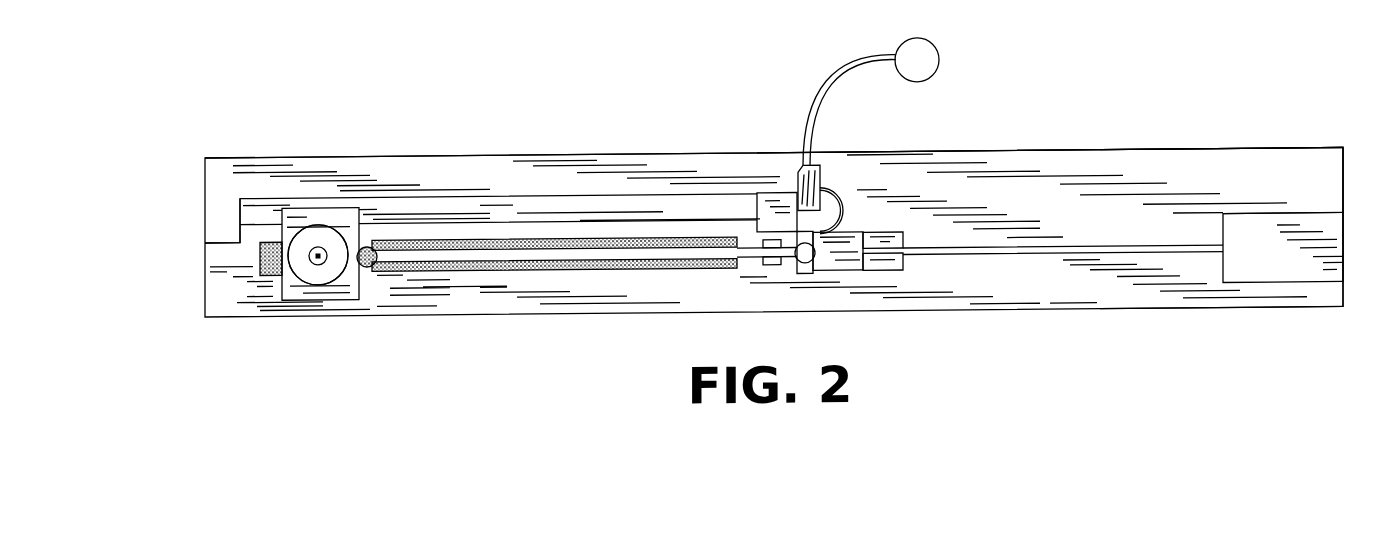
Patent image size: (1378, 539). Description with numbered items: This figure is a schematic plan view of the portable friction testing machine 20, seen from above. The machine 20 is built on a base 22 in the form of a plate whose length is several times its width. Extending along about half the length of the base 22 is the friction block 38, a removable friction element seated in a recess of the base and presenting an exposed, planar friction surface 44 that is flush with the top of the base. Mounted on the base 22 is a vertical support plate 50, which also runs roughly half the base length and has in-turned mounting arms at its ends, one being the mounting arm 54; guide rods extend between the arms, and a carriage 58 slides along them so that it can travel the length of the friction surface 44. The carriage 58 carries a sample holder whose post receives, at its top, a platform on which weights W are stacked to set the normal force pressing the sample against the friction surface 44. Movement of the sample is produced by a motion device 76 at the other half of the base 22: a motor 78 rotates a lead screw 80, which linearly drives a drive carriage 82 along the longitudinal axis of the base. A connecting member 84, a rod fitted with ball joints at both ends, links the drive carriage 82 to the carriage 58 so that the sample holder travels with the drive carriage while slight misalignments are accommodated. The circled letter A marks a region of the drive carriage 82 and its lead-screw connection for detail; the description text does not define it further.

The portable friction testing machine 20 is at (1176, 114).
The base 22 is at (1112, 317).
The friction block 38 is at (464, 290).
The friction surface 44 is at (567, 274).
The vertical support plate 50 is at (367, 163).
The mounting arm 54 is at (222, 243).
The carriage 58 is at (295, 302).
The motion device 76 is at (1061, 201).
The motor 78 is at (1275, 292).
The lead screw 80 is at (1037, 264).
The drive carriage 82 is at (843, 279).
The connecting member 84 is at (643, 274).
The weights W is at (318, 227).
The detail A is at (917, 60).